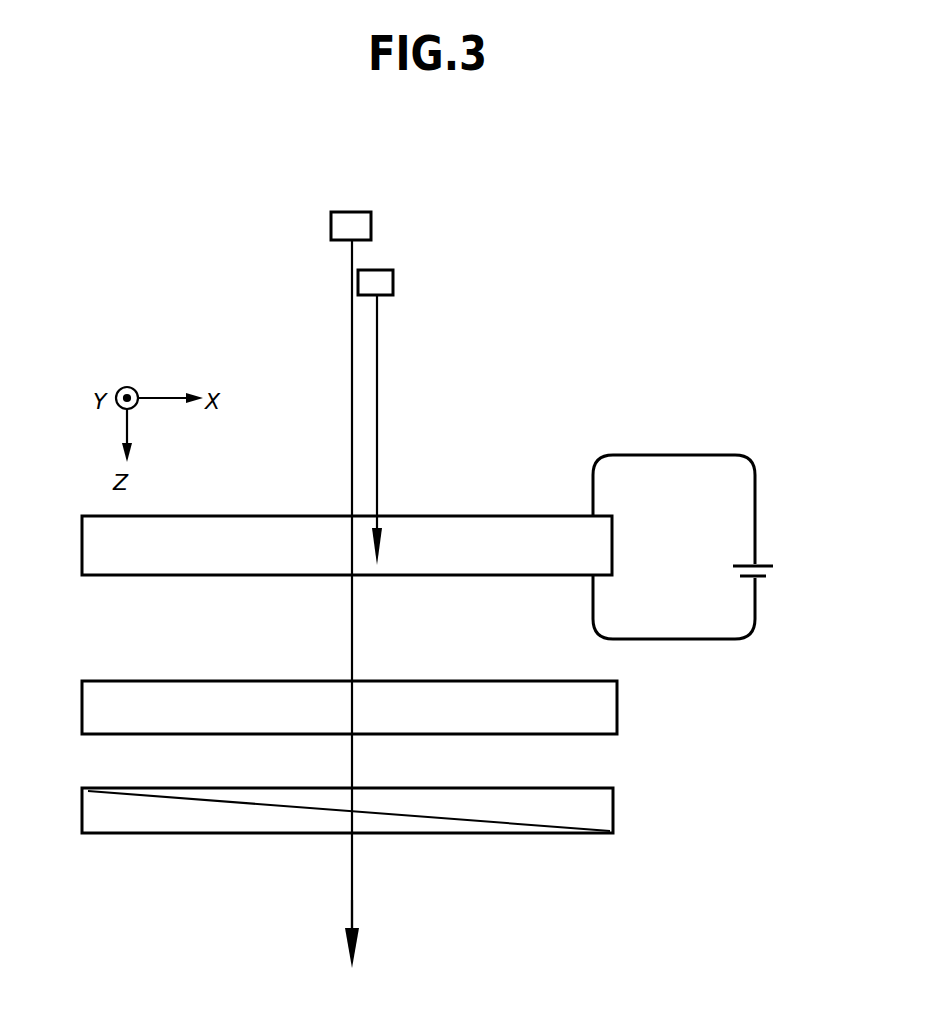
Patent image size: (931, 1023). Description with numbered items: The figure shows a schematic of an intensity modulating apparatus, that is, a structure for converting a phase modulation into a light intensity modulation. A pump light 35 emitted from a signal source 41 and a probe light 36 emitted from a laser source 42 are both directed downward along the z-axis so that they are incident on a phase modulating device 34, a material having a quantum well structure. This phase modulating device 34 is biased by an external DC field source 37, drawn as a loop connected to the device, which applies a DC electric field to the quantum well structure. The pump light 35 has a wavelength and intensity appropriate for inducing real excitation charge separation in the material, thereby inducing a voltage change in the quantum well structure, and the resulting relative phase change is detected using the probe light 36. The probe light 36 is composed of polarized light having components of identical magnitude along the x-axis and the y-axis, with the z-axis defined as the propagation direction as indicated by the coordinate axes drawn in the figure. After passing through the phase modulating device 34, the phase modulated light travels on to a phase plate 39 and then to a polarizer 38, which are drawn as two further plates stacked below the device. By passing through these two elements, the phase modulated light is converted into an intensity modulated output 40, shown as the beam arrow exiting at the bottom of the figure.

The phase modulating device 34 is at (613, 543).
The pump light 35 is at (377, 395).
The probe light 36 is at (352, 330).
The external DC field source 37 is at (764, 561).
The polarizer 38 is at (614, 812).
The phase plate 39 is at (618, 705).
The intensity modulated output 40 is at (358, 942).
The signal source 41 is at (382, 280).
The laser source 42 is at (336, 225).